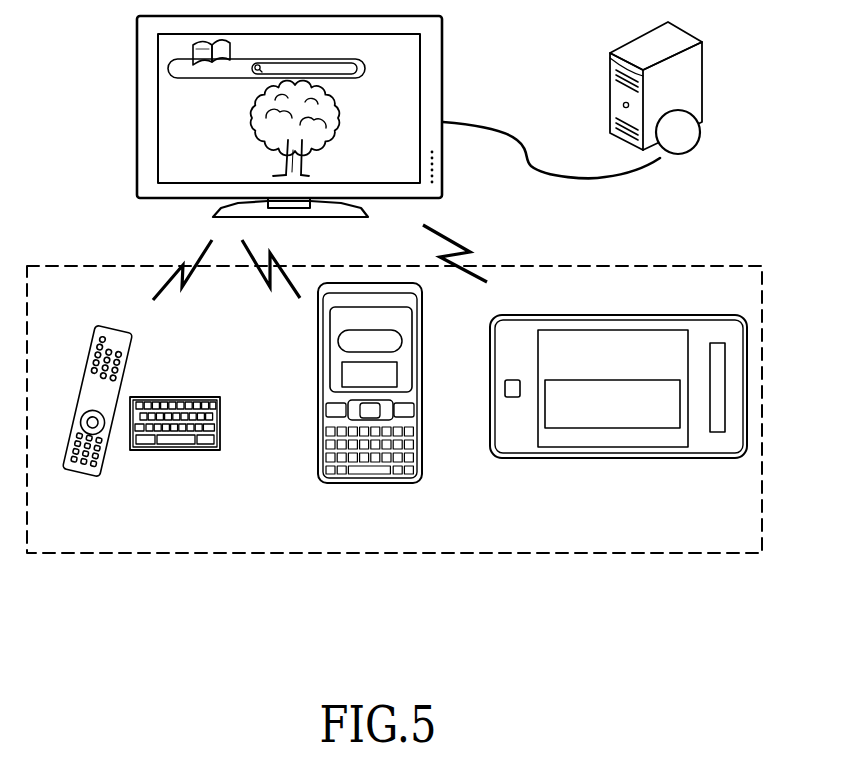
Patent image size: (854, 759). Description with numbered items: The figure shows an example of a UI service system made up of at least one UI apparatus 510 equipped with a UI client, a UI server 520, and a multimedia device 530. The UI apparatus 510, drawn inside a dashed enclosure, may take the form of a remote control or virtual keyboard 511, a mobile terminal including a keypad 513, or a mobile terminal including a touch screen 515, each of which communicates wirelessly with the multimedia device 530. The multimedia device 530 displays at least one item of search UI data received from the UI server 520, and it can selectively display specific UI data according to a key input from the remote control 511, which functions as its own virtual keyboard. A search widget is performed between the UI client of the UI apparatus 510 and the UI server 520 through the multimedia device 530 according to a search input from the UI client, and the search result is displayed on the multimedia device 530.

The UI apparatus 510 is at (700, 266).
The remote control 511 is at (150, 424).
The mobile terminal including a keypad 513 is at (372, 408).
The mobile terminal including a touch screen 515 is at (618, 415).
The UI server 520 is at (608, 100).
The multimedia device 530 is at (442, 58).